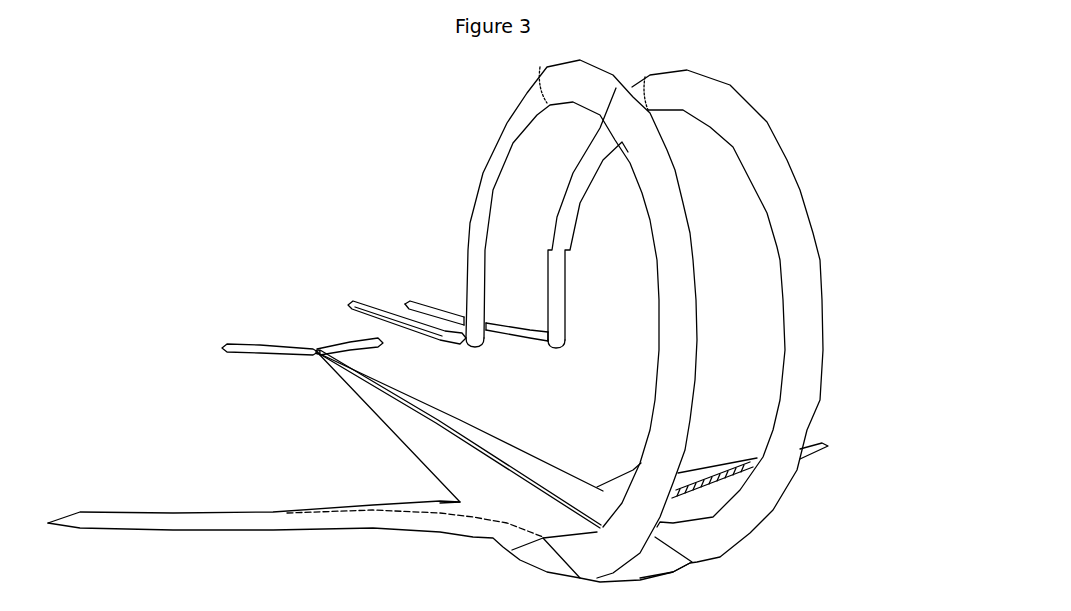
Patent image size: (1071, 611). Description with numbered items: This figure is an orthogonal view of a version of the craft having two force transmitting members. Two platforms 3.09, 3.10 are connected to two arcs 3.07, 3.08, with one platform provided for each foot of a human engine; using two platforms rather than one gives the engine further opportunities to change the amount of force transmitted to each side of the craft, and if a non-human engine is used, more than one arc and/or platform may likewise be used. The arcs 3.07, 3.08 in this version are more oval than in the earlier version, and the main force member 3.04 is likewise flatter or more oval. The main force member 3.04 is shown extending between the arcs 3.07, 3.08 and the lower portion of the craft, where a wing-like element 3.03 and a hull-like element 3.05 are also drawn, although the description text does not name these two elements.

The wing 3.03 is at (272, 349).
The main force member 3.04 is at (403, 422).
The hull fuselage 3.05 is at (287, 522).
The arc 3.07 is at (667, 373).
The arc 3.08 is at (808, 275).
The platform 3.09 is at (363, 305).
The platform 3.10 is at (418, 302).